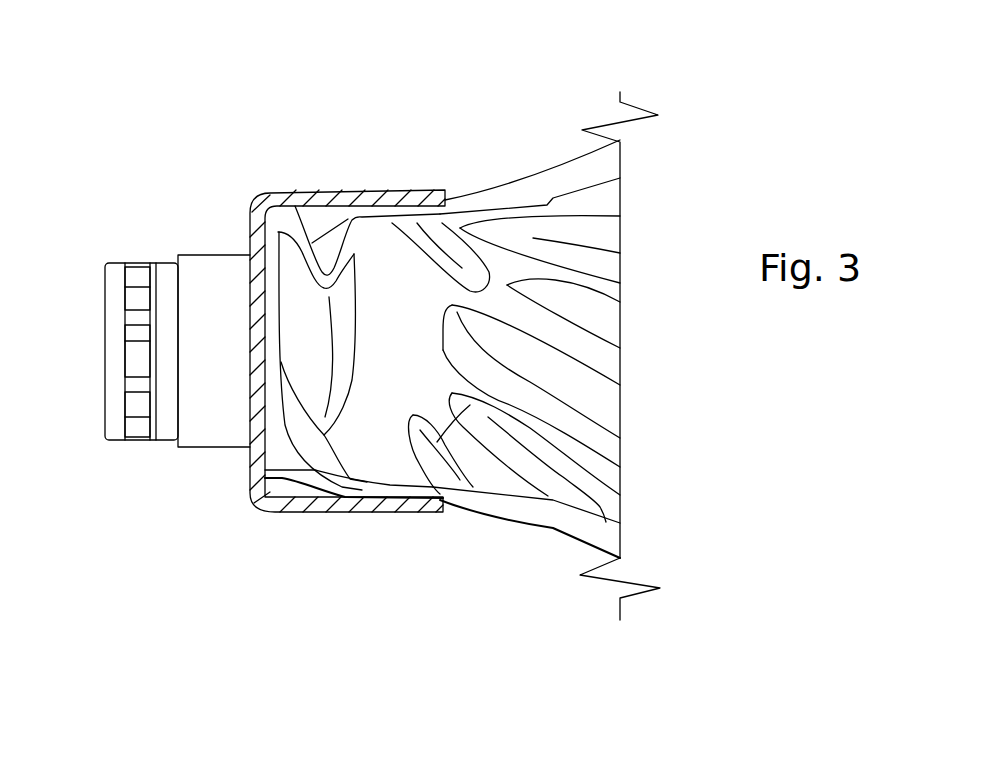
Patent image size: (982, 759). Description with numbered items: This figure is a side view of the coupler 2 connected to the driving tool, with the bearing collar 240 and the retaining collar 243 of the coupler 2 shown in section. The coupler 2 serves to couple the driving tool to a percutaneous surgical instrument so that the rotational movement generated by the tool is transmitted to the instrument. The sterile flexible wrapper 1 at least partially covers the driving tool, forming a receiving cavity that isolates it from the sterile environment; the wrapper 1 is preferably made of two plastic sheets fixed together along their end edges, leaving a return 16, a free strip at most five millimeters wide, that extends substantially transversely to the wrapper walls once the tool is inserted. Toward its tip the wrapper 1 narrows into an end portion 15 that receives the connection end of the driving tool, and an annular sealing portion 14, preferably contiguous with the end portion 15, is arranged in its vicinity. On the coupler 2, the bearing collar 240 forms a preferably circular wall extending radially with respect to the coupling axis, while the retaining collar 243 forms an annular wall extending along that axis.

The flexible wrapper 1 is at (603, 392).
The coupler 2 is at (175, 198).
The annular sealing portion 14 is at (437, 418).
The end portion 15 is at (307, 430).
The return 16 is at (532, 188).
The bearing collar 240 is at (247, 217).
The retaining collar 243 is at (335, 190).